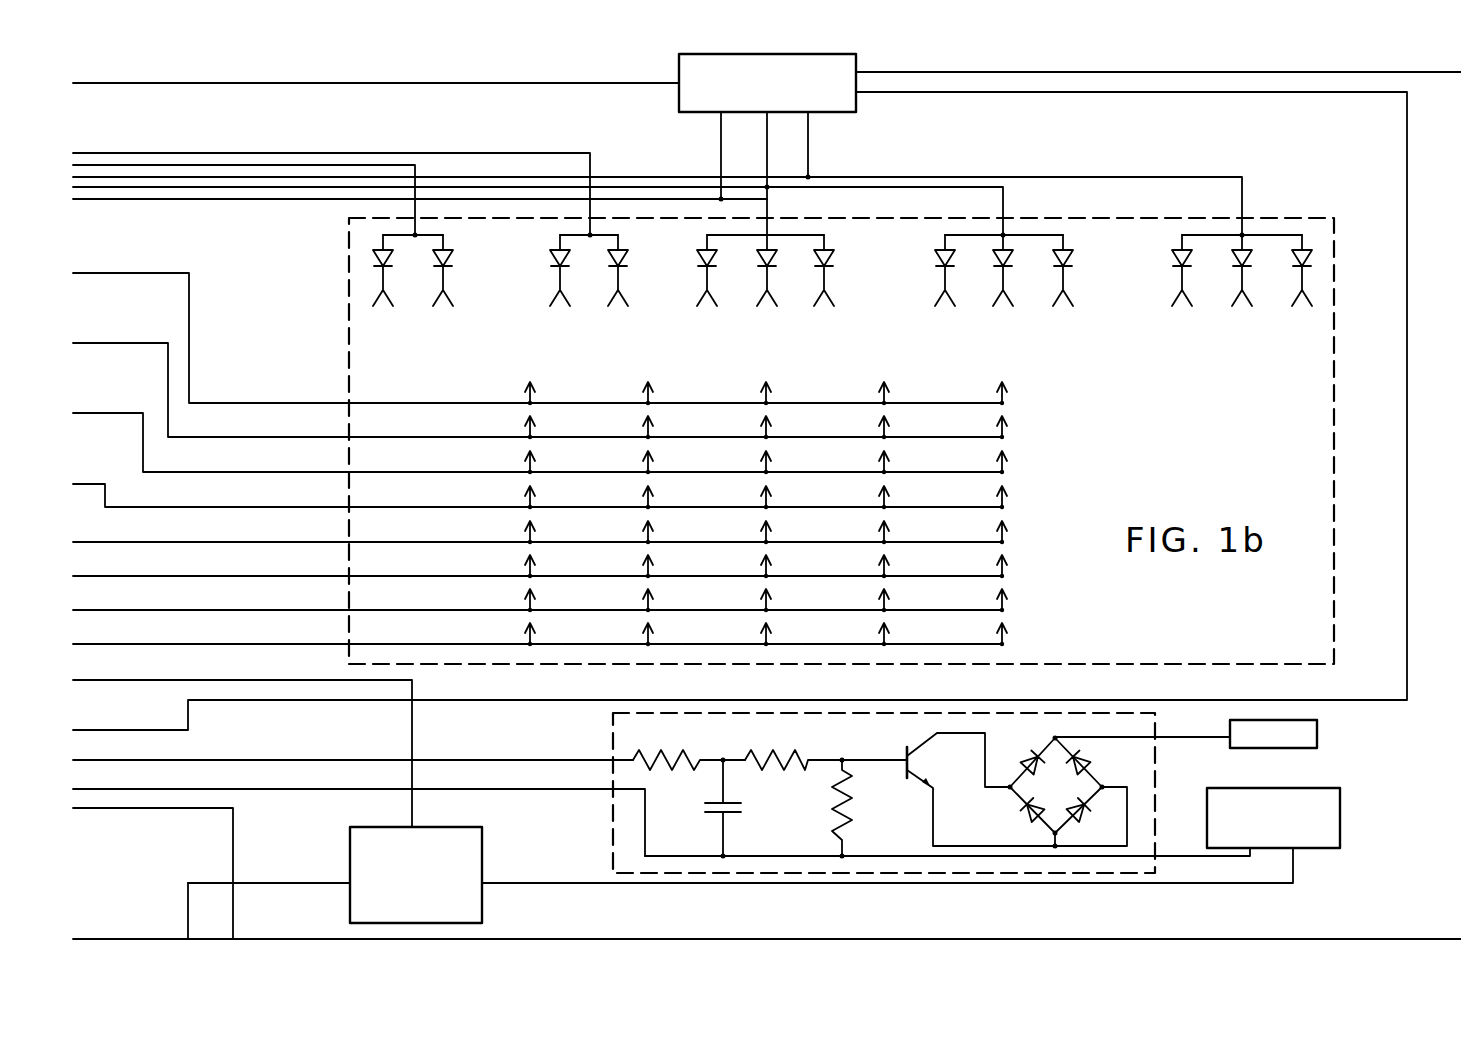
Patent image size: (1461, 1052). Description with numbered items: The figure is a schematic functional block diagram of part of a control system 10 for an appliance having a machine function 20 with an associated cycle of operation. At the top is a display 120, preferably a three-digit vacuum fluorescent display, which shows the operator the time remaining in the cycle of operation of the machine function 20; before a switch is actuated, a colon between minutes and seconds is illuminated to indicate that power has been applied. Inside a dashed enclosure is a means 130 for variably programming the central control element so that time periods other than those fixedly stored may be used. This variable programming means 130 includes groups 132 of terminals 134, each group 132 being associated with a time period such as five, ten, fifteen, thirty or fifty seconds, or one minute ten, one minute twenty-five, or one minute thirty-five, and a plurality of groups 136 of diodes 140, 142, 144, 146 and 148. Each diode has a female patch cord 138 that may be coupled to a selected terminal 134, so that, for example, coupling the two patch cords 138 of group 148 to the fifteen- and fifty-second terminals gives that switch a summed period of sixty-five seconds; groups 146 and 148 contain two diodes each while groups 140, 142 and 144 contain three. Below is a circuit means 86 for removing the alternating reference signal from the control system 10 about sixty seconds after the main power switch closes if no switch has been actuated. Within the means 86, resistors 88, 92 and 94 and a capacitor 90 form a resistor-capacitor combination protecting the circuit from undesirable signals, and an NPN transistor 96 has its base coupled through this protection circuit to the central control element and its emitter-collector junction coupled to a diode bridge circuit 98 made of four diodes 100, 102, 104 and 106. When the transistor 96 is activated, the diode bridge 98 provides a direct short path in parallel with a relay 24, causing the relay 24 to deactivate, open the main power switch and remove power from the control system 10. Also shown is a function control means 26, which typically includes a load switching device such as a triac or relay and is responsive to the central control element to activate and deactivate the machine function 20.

The control system 10 is at (1122, 67).
The display 120 is at (856, 98).
The means for variably programming the central control element 130 is at (1275, 218).
The group of terminals 132 is at (1108, 447).
The terminal 134 is at (770, 401).
The group of diodes 136 is at (1315, 264).
The female patch cord 138 is at (616, 303).
The group of diodes 140 is at (1175, 250).
The group of diodes 142 is at (936, 251).
The group of diodes 144 is at (698, 253).
The group of diodes 146 is at (550, 250).
The group of diodes 148 is at (372, 246).
The means for removing the alternating reference signal 86 is at (613, 723).
The resistor 88 is at (660, 756).
The capacitor 90 is at (739, 812).
The resistor 92 is at (785, 755).
The resistor 94 is at (852, 812).
The NPN transistor 96 is at (907, 760).
The diode bridge circuit 98 is at (998, 740).
The diode 100 is at (1021, 818).
The diode 102 is at (1083, 810).
The diode 104 is at (1086, 758).
The diode 106 is at (1030, 757).
The relay 24 is at (1317, 734).
The function control means 26 is at (480, 827).
The machine function 20 is at (1340, 808).